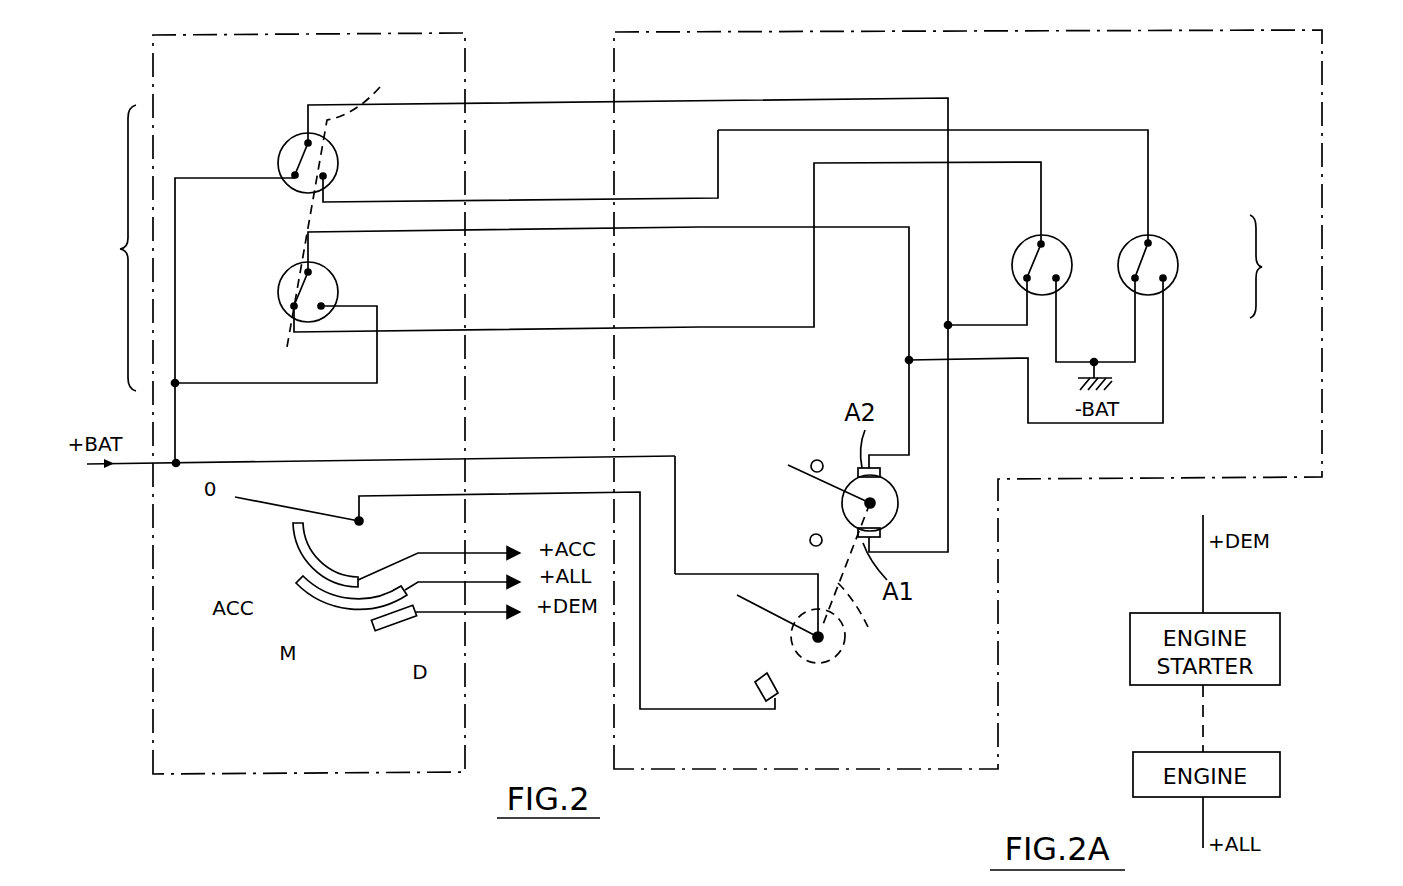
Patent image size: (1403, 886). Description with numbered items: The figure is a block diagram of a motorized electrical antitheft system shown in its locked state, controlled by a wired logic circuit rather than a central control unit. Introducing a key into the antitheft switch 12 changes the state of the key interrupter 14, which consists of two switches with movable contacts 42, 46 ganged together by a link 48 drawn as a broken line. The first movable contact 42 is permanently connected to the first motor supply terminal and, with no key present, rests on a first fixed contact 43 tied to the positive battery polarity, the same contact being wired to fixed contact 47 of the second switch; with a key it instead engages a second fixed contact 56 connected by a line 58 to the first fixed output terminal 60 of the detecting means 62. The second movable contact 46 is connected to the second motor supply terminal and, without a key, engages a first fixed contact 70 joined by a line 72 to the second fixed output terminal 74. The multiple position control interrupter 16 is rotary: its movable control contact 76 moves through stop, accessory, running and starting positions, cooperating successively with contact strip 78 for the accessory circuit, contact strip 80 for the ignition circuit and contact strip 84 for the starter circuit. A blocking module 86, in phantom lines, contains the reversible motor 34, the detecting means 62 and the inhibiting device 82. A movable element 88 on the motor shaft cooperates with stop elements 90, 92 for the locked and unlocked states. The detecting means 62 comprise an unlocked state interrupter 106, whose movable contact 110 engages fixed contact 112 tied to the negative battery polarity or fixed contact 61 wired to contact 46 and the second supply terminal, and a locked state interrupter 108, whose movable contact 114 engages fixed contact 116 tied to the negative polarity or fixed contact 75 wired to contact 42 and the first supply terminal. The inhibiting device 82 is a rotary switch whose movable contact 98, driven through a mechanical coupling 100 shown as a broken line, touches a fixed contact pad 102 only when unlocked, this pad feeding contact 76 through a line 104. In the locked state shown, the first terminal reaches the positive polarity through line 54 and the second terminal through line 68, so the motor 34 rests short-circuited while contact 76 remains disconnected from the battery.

The antitheft switch 12 is at (145, 622).
The key interrupter 14 is at (98, 248).
The multiple position control interrupter 16 is at (322, 682).
The motor 34 is at (883, 487).
The movable contact 42 is at (296, 160).
The first fixed contact 43 is at (290, 180).
The movable contact 46 is at (297, 288).
The fixed contact 47 is at (323, 304).
The link 48 is at (344, 200).
The line 54 is at (765, 98).
The second fixed contact 56 is at (328, 174).
The line 58 is at (1070, 128).
The first fixed output terminal 60 is at (1150, 240).
The fixed contact 61 is at (1164, 279).
The detecting means 62 is at (1274, 266).
The line 68 is at (705, 228).
The first fixed contact 70 is at (291, 307).
The line 72 is at (697, 328).
The second fixed output terminal 74 is at (1053, 237).
The fixed contact 75 is at (1026, 279).
The movable control contact 76 is at (300, 510).
The fixed contact strip 78 is at (303, 538).
The fixed contact strip 80 is at (298, 583).
The inhibiting device 82 is at (815, 688).
The contact strip 84 is at (379, 631).
The blocking module 86 is at (1323, 222).
The movable element 88 is at (795, 477).
The mechanical stop element 90 is at (813, 460).
The mechanical stop element 92 is at (809, 540).
The movable contact 98 is at (763, 610).
The mechanical coupling 100 is at (868, 627).
The fixed contact pad 102 is at (757, 688).
The line 104 is at (520, 496).
The interrupter 106 is at (1182, 227).
The interrupter 108 is at (1082, 245).
The movable contact 110 is at (1143, 263).
The fixed contact 112 is at (1097, 359).
The movable contact 114 is at (1033, 267).
The fixed contact 116 is at (1047, 293).